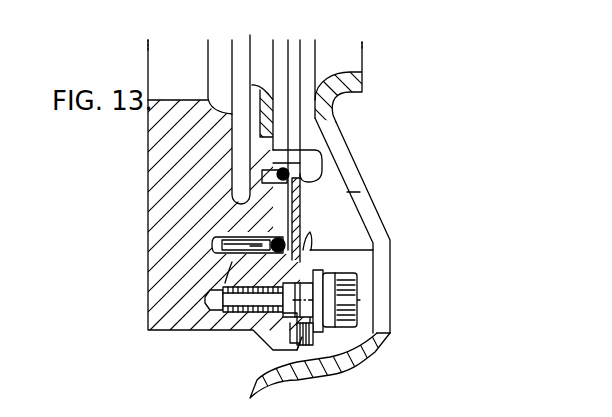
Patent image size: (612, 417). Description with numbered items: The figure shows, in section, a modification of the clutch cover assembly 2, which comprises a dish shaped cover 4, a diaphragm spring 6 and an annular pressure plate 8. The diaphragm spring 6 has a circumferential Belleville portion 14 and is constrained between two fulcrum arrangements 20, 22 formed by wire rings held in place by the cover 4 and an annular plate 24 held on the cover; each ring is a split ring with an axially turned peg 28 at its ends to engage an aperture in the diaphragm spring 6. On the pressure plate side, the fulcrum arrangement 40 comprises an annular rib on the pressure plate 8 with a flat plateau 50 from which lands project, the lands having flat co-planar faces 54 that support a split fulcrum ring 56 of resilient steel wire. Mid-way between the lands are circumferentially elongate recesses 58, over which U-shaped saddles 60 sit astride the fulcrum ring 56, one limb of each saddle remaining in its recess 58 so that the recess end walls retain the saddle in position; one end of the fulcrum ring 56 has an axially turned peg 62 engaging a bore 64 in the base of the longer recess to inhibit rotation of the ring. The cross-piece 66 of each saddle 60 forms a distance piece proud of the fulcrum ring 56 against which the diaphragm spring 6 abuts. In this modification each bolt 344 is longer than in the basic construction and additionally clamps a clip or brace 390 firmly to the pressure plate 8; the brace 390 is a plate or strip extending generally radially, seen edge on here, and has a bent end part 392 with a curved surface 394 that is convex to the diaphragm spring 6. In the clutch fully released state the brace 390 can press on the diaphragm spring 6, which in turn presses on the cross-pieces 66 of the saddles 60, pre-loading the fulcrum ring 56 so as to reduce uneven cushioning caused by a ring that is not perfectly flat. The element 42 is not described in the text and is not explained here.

The clutch cover assembly 2 is at (354, 380).
The dish shaped cover 4 is at (358, 165).
The diaphragm spring 6 is at (308, 194).
The annular pressure plate 8 is at (145, 277).
The circumferential Belleville portion 14 is at (300, 214).
The fulcrum arrangement 20 is at (341, 146).
The fulcrum arrangement 22 is at (257, 150).
The annular plate 24 is at (254, 86).
The axially turned peg 28 is at (287, 110).
The fulcrum arrangement 40 is at (285, 312).
The flange 42 is at (310, 343).
The flat plateau 50 is at (245, 216).
The flat co-planar faces 54 is at (262, 178).
The split fulcrum ring 56 is at (250, 312).
The circumferentially elongate recess 58 is at (230, 238).
The saddle 60 is at (212, 295).
The axially turned peg 62 is at (216, 244).
The bore 64 is at (232, 262).
The cross-piece 66 is at (291, 332).
The bolt 344 is at (380, 340).
The brace 390 is at (320, 277).
The bent end part 392 is at (309, 244).
The curved surface 394 is at (373, 250).